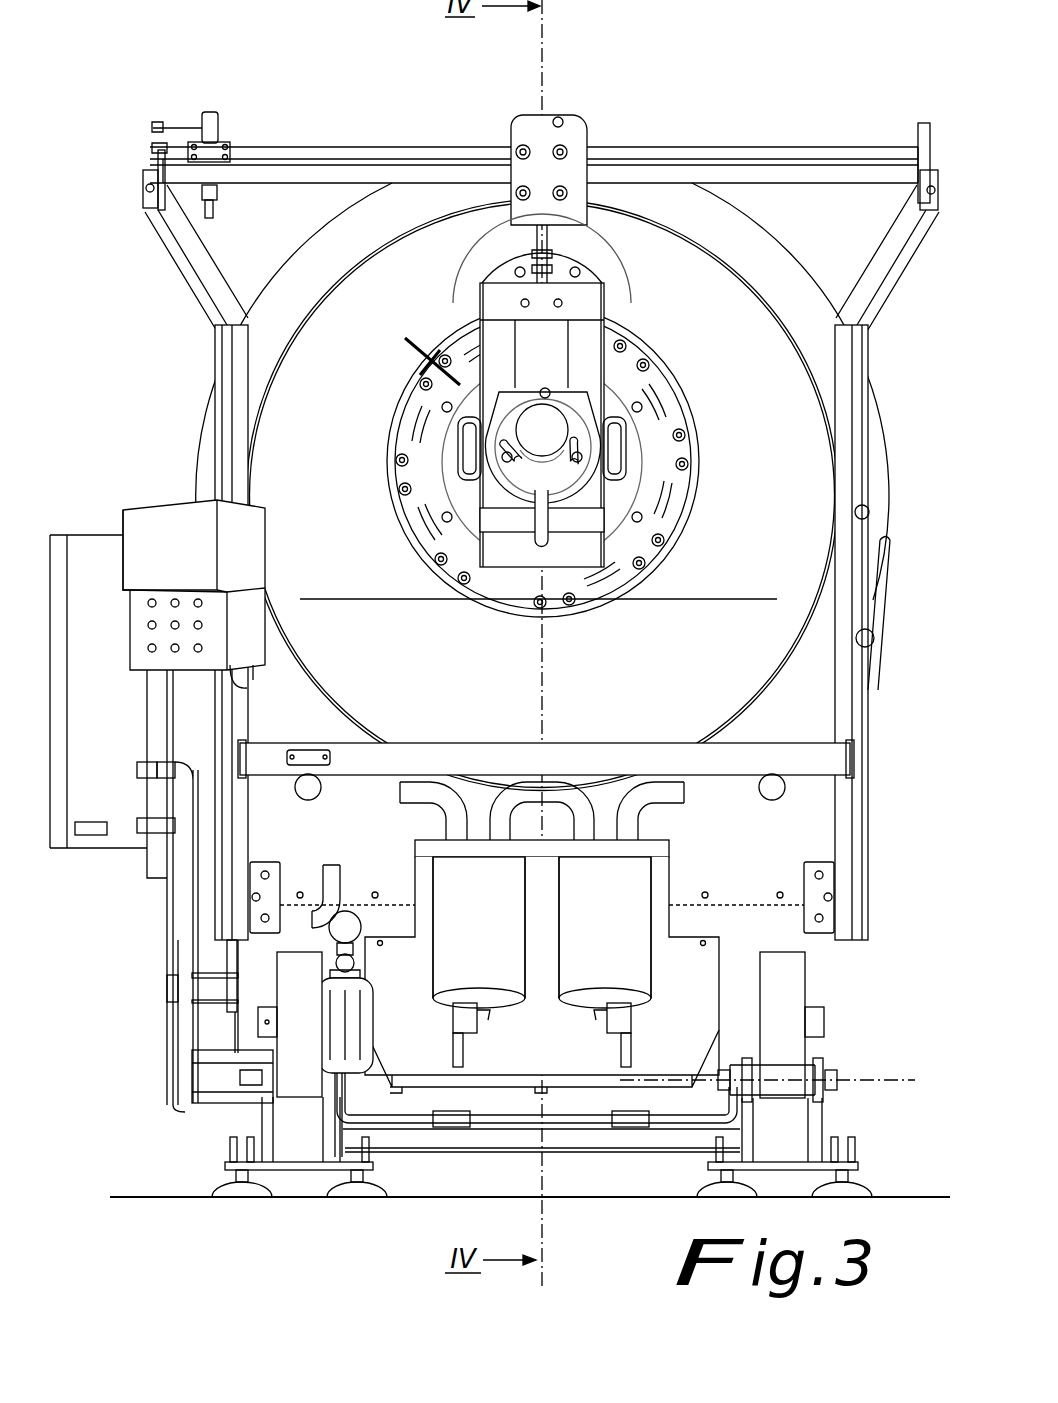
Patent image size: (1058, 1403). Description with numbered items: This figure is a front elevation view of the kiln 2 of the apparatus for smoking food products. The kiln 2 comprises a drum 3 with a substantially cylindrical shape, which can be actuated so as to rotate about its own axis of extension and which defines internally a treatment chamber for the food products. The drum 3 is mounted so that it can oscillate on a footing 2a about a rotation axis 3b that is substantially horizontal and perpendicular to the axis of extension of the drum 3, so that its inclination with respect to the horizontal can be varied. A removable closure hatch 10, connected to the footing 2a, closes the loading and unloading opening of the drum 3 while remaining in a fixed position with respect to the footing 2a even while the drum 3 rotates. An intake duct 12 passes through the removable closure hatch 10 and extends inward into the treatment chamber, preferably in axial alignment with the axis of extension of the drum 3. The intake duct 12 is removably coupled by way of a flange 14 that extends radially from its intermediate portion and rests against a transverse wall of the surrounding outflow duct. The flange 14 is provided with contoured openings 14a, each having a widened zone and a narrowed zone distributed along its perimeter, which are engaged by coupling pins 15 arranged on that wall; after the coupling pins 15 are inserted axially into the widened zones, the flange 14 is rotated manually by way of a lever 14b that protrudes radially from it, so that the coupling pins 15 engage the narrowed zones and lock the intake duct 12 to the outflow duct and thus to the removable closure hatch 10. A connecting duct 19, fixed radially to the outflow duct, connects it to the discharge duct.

The kiln 2 is at (752, 118).
The footing 2a is at (443, 1140).
The drum 3 is at (853, 400).
The rotation axis 3b is at (903, 1080).
The removable closure hatch 10 is at (640, 423).
The intake duct 12 is at (530, 457).
The flange 14 is at (580, 437).
The contoured openings 14a is at (500, 450).
The lever 14b is at (546, 548).
The coupling pins 15 is at (548, 393).
The connecting duct 19 is at (530, 367).